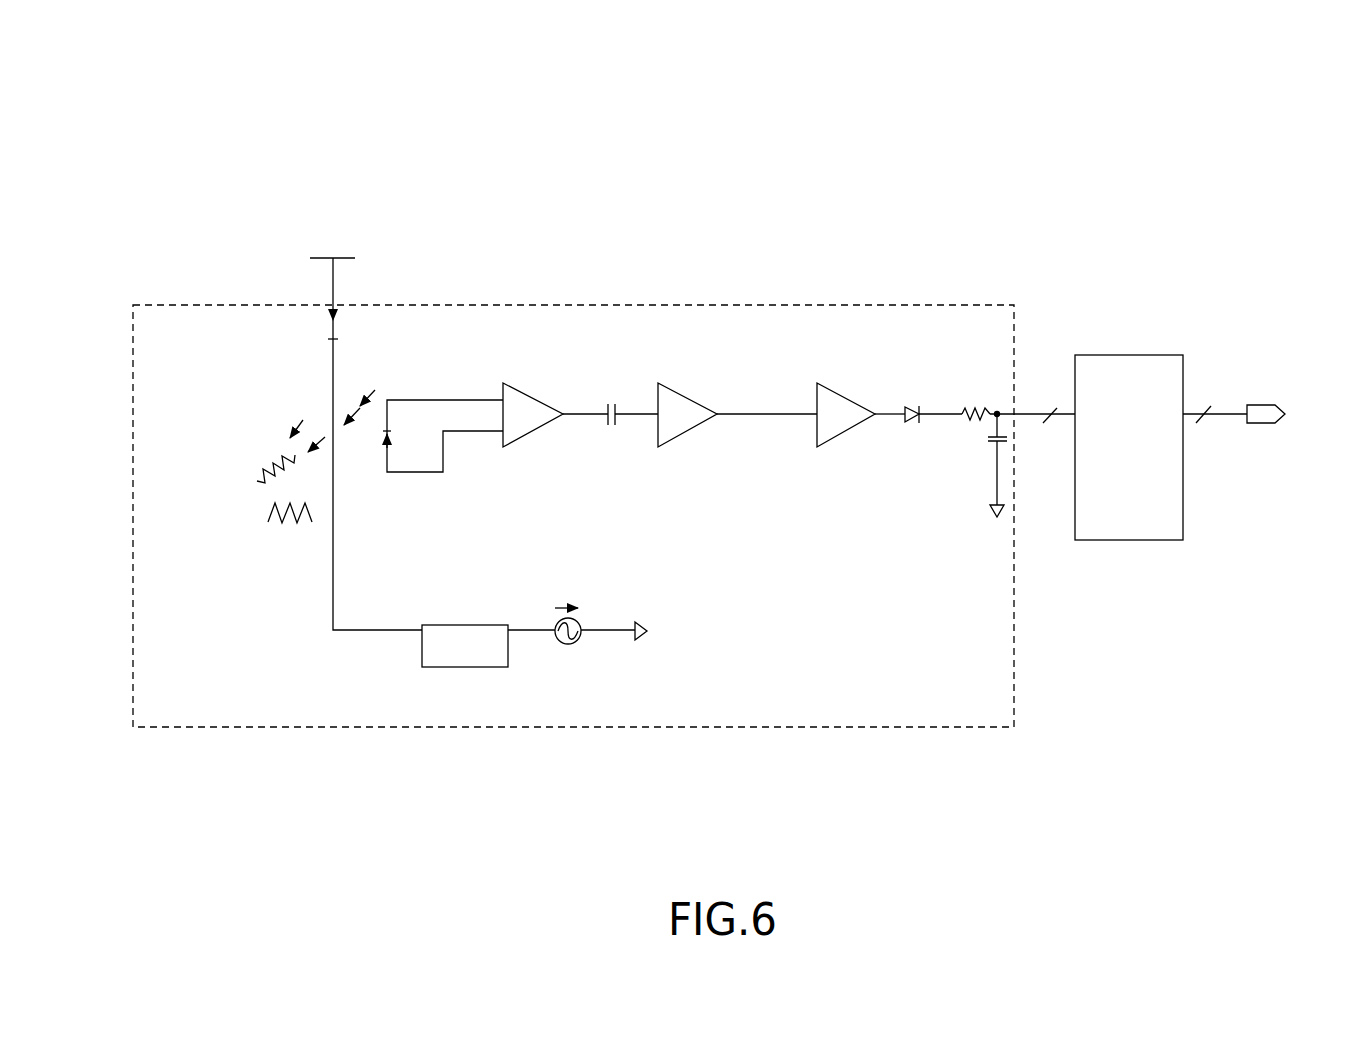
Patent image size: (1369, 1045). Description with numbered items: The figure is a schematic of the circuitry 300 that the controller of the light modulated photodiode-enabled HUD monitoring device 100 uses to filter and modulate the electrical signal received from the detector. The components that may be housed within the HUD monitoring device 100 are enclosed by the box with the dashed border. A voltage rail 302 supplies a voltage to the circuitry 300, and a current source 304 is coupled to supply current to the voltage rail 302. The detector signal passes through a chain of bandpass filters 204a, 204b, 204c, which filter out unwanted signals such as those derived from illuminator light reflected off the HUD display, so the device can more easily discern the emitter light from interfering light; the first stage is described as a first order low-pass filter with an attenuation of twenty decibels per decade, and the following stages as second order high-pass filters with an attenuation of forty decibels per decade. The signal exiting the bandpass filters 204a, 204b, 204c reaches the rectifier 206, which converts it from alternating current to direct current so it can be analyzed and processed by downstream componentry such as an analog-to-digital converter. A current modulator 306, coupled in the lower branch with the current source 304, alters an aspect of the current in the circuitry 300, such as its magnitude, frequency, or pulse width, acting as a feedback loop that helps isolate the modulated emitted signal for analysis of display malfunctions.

The circuitry 300 is at (150, 58).
The light modulated photodiode-enabled HUD monitoring device 100 is at (155, 305).
The voltage rail 302 is at (318, 196).
The bandpass filter 204a is at (513, 400).
The bandpass filter 204b is at (668, 405).
The bandpass filter 204c is at (827, 405).
The rectifier 206 is at (911, 406).
The current modulator 306 is at (443, 667).
The current source 304 is at (557, 642).